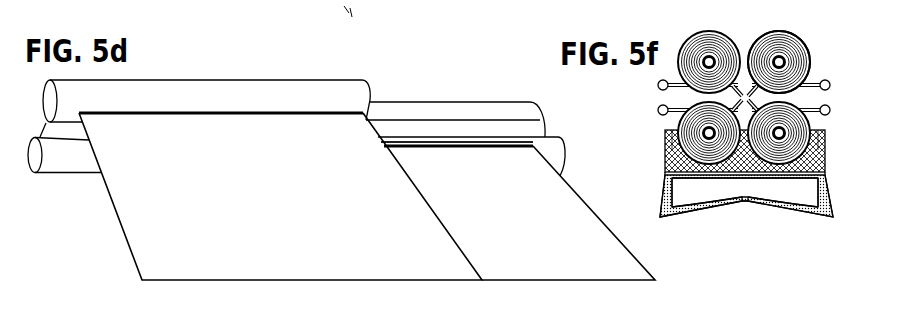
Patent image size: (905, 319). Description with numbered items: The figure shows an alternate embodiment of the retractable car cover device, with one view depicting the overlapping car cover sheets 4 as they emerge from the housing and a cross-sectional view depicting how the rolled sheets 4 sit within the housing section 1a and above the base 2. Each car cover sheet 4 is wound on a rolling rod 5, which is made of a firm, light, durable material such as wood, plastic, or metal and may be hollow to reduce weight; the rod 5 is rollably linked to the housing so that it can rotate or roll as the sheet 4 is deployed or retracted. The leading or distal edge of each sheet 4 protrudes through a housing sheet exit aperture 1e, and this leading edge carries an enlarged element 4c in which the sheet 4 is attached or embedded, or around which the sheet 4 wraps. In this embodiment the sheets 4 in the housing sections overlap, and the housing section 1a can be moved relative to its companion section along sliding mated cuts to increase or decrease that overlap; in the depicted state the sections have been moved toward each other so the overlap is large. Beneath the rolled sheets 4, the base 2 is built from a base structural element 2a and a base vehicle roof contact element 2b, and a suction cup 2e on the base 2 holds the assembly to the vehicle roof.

In FIG. 5d, the housing sheet exit aperture 1e is at (480, 146).
In FIG. 5d, the car cover sheet 4 is at (367, 196).
In FIG. 5f, the car cover sheet 4 is at (705, 36).
In FIG. 5f, the rolling rod 5 is at (714, 58).
In FIG. 5f, the housing section 1a is at (805, 47).
In FIG. 5f, the enlarged element 4c is at (658, 86).
In FIG. 5f, the base 2 is at (752, 188).
In FIG. 5f, the base structural element 2a is at (846, 130).
In FIG. 5f, the base vehicle roof contact element 2b is at (770, 209).
In FIG. 5f, the suction cup 2e is at (803, 215).